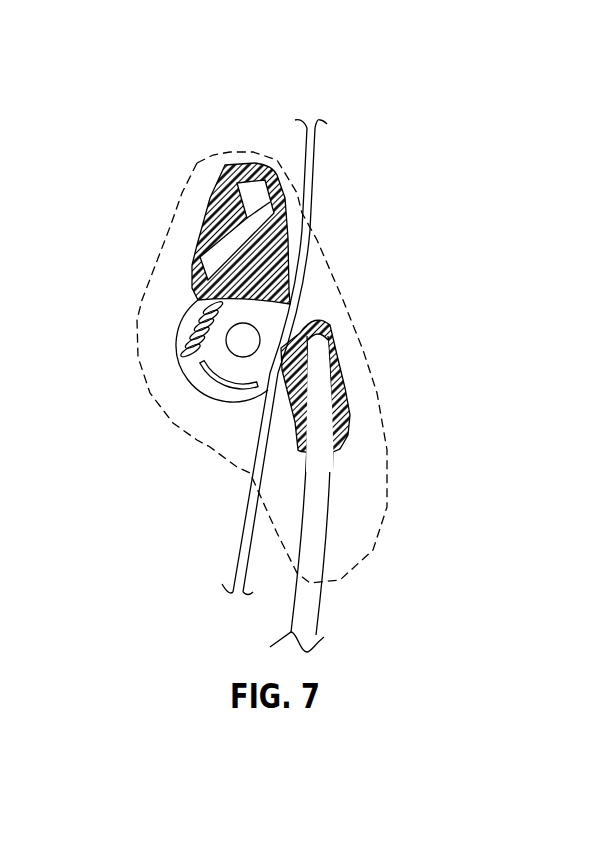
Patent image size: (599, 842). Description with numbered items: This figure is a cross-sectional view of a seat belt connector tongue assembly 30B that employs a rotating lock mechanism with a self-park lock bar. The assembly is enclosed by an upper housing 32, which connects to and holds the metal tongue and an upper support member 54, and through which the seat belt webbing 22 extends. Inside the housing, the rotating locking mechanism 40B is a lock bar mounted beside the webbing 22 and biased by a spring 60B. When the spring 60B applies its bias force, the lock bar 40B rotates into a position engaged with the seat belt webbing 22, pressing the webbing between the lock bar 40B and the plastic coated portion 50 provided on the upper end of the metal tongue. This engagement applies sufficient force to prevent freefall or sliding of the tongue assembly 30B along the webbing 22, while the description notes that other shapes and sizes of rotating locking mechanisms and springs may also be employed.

The seat belt connector tongue assembly 30B is at (156, 104).
The upper housing 32 is at (195, 161).
The seat belt webbing 22 is at (306, 150).
The upper support member 54 is at (236, 162).
The rotating locking mechanism 40B is at (222, 388).
The spring 60B is at (187, 328).
The plastic coated portion 50 is at (343, 388).